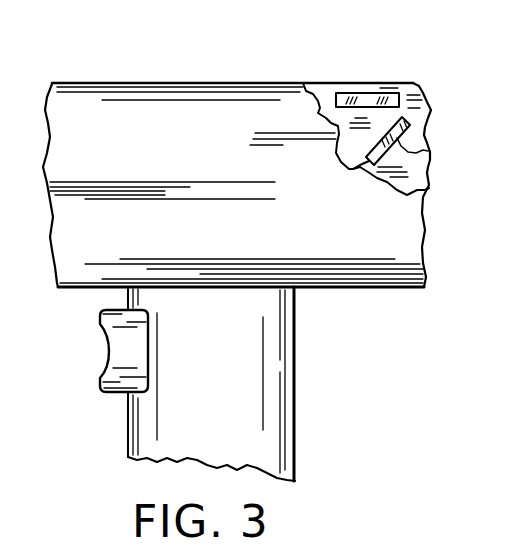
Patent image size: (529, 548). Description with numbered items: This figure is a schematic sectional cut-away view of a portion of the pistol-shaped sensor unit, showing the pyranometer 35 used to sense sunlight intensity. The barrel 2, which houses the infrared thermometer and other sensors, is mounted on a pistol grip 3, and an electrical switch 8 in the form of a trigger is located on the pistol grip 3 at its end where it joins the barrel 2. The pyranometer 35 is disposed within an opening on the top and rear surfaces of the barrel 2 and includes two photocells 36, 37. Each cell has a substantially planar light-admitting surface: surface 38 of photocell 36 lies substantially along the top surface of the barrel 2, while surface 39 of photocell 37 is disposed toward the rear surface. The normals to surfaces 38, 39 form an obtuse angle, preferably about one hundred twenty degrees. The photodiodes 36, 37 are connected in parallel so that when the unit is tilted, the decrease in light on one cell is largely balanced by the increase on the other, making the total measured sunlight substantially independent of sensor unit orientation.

The barrel 2 is at (142, 117).
The pistol grip 3 is at (297, 418).
The electrical switch 8 is at (108, 358).
The pyranometer 35 is at (438, 73).
The photocell 36 is at (342, 93).
The photocell 37 is at (353, 170).
The planar surface 38 is at (363, 92).
The planar surface 39 is at (428, 152).